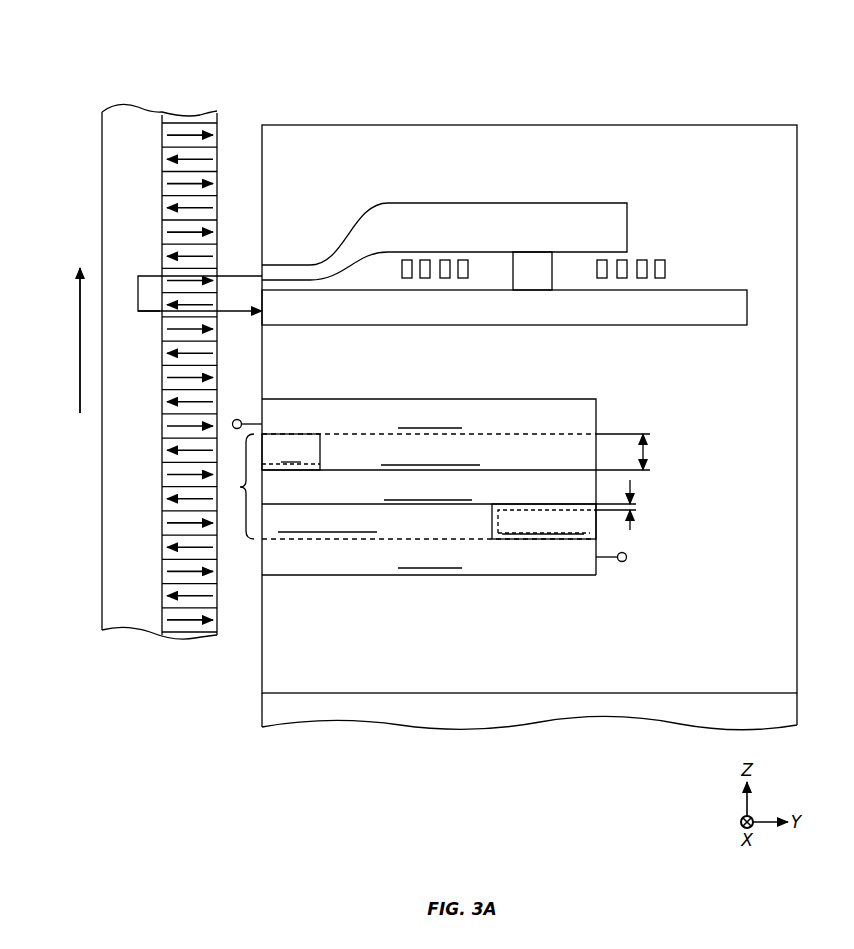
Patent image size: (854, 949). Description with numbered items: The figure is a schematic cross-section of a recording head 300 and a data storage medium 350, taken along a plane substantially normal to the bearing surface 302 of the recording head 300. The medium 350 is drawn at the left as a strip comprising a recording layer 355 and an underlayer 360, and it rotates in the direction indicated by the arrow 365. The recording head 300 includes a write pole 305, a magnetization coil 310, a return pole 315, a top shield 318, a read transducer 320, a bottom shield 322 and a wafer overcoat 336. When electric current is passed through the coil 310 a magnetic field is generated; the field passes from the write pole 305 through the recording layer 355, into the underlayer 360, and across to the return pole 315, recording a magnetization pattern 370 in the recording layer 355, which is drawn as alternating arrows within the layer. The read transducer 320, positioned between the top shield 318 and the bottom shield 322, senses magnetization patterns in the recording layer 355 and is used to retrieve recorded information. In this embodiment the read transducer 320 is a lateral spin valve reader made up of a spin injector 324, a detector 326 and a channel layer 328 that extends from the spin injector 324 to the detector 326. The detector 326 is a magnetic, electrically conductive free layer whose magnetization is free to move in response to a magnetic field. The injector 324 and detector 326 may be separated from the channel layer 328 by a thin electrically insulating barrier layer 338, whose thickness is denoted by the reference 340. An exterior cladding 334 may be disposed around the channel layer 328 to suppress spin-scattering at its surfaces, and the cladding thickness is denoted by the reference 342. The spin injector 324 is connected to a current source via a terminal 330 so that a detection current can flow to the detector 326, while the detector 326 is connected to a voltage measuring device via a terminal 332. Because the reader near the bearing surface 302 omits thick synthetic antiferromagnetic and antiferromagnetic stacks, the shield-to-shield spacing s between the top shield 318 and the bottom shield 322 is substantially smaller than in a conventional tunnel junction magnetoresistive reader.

The recording head 300 is at (652, 88).
The bearing surface 302 is at (260, 669).
The write pole 305 is at (305, 263).
The magnetization coil 310 is at (447, 258).
The return pole 315 is at (450, 305).
The top shield 318 is at (512, 420).
The read transducer 320 is at (500, 501).
The bottom shield 322 is at (530, 557).
The spin injector 324 is at (582, 533).
The detector 326 is at (307, 440).
The channel layer 328 is at (380, 498).
The terminal 330 is at (626, 557).
The terminal 332 is at (236, 419).
The exterior cladding 334 is at (560, 440).
The wafer overcoat 336 is at (703, 377).
The barrier layer 338 is at (273, 462).
The thickness of barrier layer 340 is at (638, 505).
The thickness of cladding layer 342 is at (646, 452).
The data storage medium 350 is at (177, 379).
The recording layer 355 is at (200, 333).
The underlayer 360 is at (118, 610).
The arrow 365 is at (78, 345).
The magnetization pattern 370 is at (195, 130).